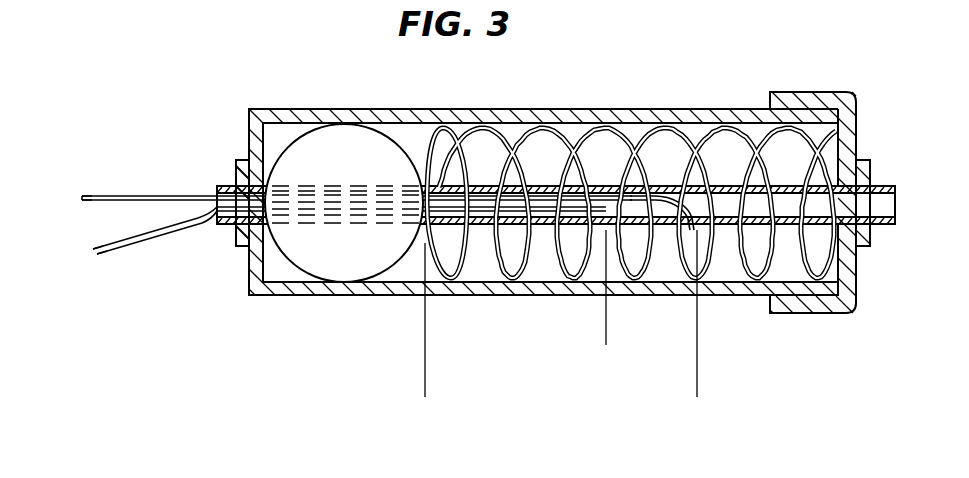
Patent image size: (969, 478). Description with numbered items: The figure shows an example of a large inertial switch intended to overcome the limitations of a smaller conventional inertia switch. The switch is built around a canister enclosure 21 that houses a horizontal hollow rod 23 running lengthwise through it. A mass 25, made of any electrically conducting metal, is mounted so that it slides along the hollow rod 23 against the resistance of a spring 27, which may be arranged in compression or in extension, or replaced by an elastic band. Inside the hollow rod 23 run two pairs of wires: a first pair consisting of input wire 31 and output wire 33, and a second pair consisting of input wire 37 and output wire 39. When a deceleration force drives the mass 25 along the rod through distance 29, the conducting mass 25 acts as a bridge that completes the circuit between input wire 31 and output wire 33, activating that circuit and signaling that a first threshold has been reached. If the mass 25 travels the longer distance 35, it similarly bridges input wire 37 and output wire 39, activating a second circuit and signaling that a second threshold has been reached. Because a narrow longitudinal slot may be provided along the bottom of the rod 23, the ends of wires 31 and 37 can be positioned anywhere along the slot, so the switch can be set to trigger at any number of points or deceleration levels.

The canister enclosure 21 is at (428, 109).
The horizontal hollow rod 23 is at (790, 150).
The mass 25 is at (348, 142).
The spring 27 is at (620, 170).
The distance 29 is at (606, 331).
The input wire 31 is at (116, 250).
The output wire 33 is at (103, 239).
The distance 35 is at (697, 382).
The input wire 37 is at (83, 208).
The output wire 39 is at (106, 195).